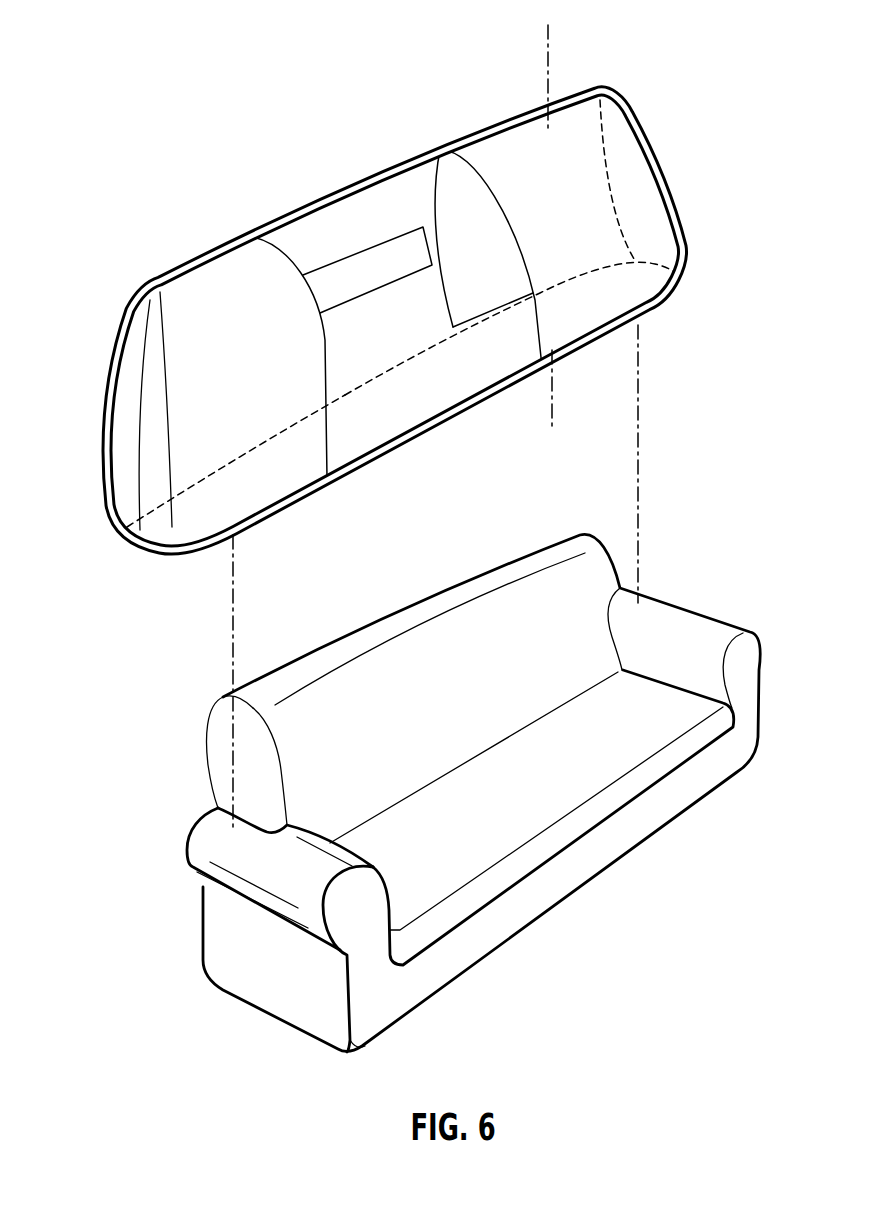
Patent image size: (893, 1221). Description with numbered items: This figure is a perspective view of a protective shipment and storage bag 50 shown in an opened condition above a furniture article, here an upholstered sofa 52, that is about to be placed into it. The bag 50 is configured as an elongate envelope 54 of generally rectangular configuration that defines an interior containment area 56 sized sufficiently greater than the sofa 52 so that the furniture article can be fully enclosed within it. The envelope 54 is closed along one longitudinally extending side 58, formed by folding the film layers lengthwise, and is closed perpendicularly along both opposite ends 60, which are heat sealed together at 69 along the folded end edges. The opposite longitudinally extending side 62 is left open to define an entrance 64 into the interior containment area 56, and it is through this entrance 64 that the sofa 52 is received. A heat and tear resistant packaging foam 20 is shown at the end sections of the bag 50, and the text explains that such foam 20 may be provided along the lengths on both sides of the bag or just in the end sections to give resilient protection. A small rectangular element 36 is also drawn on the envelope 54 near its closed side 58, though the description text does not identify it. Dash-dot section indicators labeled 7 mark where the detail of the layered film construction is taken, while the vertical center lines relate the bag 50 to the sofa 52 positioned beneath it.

The protective shipment and storage bag 50 is at (397, 307).
The upholstered sofa 52 is at (210, 918).
The heat and tear resistant packaging foam 20 is at (212, 280).
The elongate envelope 54 is at (302, 225).
The tag 36 is at (405, 243).
The closed longitudinally extending side 58 is at (422, 164).
The closed ends 60 is at (616, 124).
The opposite longitudinally extending side 62 is at (307, 499).
The entrance 64 is at (487, 409).
The interior containment area 56 is at (397, 307).
The heat seal 69 is at (137, 414).
The section line 7- 7 is at (548, 25).